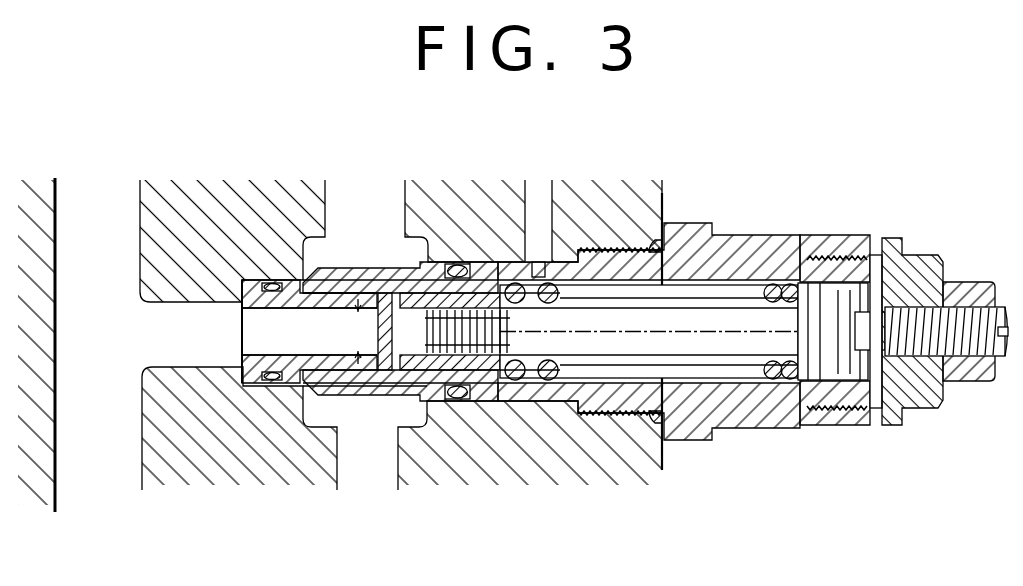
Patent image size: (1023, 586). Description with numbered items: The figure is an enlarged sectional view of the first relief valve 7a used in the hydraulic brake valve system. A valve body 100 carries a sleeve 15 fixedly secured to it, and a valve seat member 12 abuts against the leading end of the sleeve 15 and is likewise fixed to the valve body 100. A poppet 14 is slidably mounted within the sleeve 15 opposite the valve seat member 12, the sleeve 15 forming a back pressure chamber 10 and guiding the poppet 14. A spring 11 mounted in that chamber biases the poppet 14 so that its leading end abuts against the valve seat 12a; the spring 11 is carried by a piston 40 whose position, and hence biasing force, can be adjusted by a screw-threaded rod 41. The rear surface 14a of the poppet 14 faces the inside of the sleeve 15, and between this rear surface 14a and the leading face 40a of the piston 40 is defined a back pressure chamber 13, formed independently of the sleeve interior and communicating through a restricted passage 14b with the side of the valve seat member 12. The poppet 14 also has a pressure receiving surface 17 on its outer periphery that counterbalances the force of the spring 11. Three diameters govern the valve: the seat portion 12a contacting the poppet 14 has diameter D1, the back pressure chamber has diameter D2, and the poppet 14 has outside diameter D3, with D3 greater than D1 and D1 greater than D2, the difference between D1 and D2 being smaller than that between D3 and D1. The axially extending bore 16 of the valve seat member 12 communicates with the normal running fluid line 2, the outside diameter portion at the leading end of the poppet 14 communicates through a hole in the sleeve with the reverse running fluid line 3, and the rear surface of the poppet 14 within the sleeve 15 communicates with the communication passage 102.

The normal running fluid line 2 is at (370, 208).
The reverse running fluid line 3 is at (95, 221).
The first relief valve 7a is at (655, 170).
The back pressure chamber 10 is at (674, 382).
The spring 11 is at (567, 262).
The valve seat member 12 is at (244, 283).
The valve seat 12a is at (378, 366).
The back pressure chamber 13 is at (392, 290).
The poppet 14 is at (430, 268).
The rear surface 14a is at (413, 380).
The restricted passage 14b is at (375, 292).
The sleeve 15 is at (750, 243).
The axially extending bore 16 is at (269, 350).
The pressure receiving surface 17 is at (380, 413).
The piston 40 is at (808, 288).
The leading face 40a is at (462, 279).
The screw-threaded rod 41 is at (966, 310).
The valve body 100 is at (662, 213).
The communication passage 102 is at (532, 197).
The diameter of seat portion D1 is at (360, 331).
The diameter of back pressure chamber D2 is at (470, 355).
The outside diameter of poppet D3 is at (500, 320).